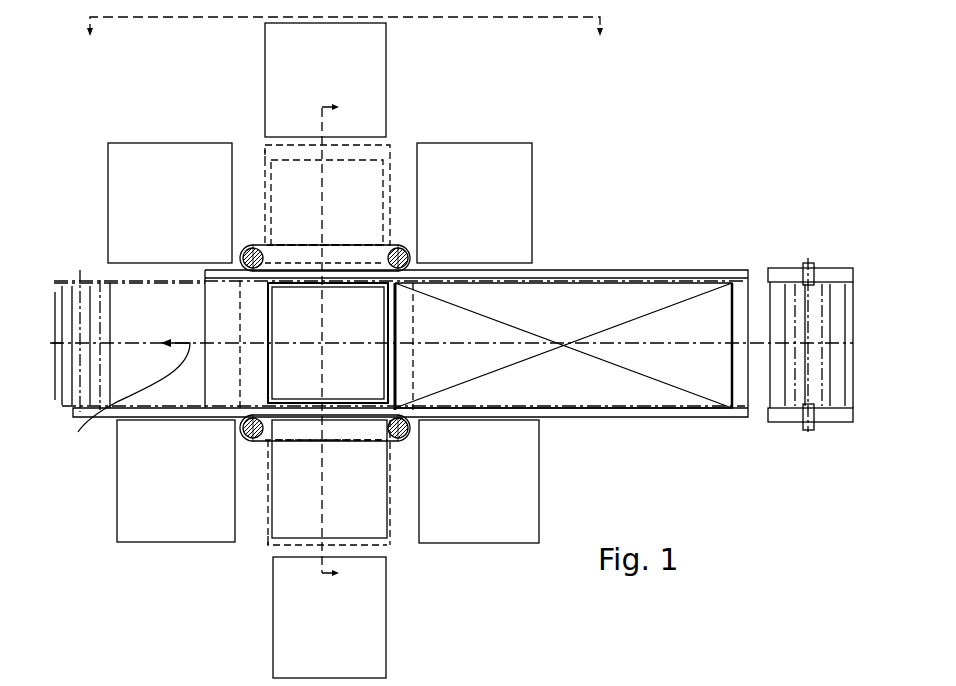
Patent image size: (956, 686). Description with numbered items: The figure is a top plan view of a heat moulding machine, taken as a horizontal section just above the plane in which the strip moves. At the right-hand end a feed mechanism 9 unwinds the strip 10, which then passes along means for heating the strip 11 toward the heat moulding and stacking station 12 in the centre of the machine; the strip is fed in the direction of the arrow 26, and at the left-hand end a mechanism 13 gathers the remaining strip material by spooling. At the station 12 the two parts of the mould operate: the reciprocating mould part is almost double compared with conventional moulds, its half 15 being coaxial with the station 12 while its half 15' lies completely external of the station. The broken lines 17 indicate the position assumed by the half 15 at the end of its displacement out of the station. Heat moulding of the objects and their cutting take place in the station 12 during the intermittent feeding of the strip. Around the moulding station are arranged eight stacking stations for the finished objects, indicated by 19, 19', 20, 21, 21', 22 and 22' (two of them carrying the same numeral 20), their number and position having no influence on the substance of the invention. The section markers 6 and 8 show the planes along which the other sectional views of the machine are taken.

The section line 6- 6 is at (339, 342).
The section line 8- 8 is at (343, 45).
The feed mechanism 9 is at (826, 268).
The strip 10 is at (757, 288).
The means for heating the strip 11 is at (605, 292).
The heat moulding and stacking station 12 is at (341, 388).
The mechanism for the arrangement of the remaining strip material by spooling 13 is at (75, 290).
The mould half 15 is at (328, 343).
The mould half 15' is at (329, 482).
The broken lines 17 is at (372, 157).
The stacking station 19 is at (176, 481).
The stacking station 19' is at (239, 565).
The stacking station 20 is at (491, 501).
The stacking station 21 is at (170, 203).
The stacking station 21' is at (233, 129).
The stacking station 22 is at (474, 203).
The stacking station 22' is at (325, 80).
The arrow 26 is at (126, 403).